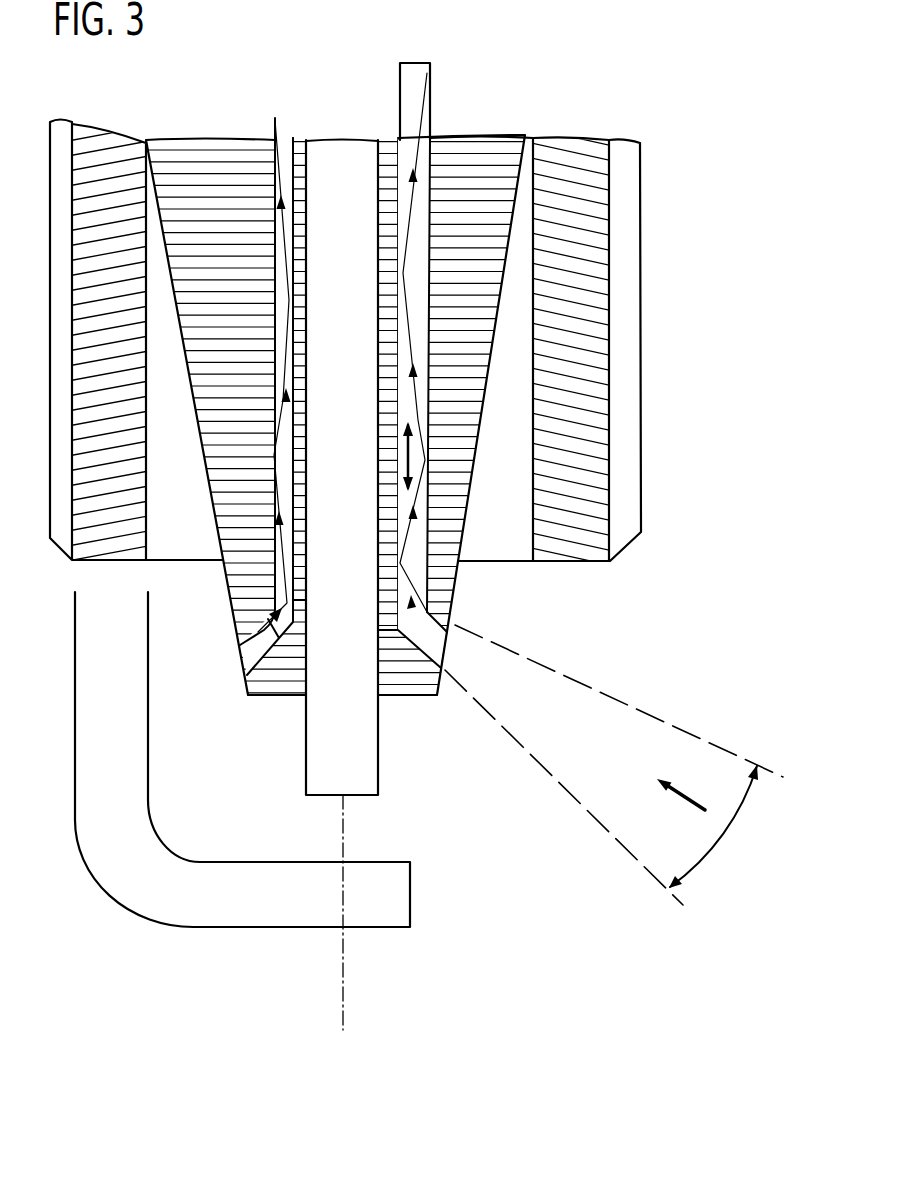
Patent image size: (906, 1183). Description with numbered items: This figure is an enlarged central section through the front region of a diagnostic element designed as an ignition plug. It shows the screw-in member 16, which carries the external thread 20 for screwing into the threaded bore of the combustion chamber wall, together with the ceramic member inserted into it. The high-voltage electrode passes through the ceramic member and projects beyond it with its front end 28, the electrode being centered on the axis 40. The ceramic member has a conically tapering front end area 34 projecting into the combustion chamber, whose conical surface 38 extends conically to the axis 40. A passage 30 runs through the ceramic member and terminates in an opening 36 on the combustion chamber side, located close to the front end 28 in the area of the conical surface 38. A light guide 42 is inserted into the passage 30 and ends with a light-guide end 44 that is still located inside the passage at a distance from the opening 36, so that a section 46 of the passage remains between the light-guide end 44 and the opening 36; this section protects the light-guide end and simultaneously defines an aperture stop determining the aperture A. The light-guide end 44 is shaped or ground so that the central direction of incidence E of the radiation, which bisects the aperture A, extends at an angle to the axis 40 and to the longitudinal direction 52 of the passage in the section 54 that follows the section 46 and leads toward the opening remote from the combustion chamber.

The screw-in member 16 is at (587, 347).
The external thread 20 is at (620, 398).
The front end 28 is at (360, 783).
The passage 30 is at (420, 554).
The front end area 34 is at (485, 297).
The opening 36 is at (445, 642).
The conical surface 38 is at (423, 612).
The axis 40 is at (352, 997).
The light guide 42 is at (416, 56).
The light-guide end 44 is at (410, 630).
The section 46 is at (440, 630).
The longitudinal direction 52 is at (410, 457).
The section 54 is at (422, 520).
The aperture A is at (716, 844).
The central direction of incidence E is at (678, 803).